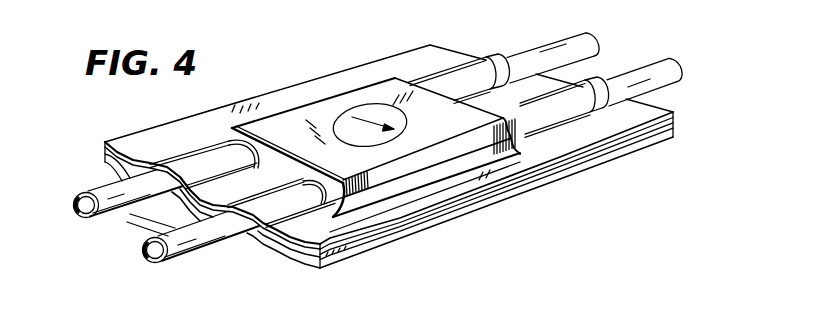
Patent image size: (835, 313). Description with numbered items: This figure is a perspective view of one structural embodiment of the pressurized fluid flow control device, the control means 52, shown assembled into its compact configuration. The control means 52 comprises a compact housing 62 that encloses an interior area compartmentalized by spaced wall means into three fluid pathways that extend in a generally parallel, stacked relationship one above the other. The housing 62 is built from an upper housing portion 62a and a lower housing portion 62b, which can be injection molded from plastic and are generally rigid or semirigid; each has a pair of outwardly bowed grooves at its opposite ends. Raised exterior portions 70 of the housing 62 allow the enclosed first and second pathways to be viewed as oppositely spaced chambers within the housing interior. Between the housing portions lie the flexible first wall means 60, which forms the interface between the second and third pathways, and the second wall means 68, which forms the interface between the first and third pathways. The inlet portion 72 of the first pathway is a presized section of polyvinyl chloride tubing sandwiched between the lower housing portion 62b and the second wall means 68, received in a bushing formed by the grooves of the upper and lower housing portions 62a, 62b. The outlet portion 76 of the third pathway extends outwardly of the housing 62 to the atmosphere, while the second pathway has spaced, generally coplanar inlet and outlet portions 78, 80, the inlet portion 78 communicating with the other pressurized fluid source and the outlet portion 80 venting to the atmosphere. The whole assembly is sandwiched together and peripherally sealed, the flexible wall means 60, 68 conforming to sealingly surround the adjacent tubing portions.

The control means 52 is at (441, 30).
The first wall means 60 is at (103, 148).
The housing 62 is at (392, 75).
The upper housing portion 62a is at (105, 141).
The lower housing portion 62b is at (104, 166).
The second wall means 68 is at (103, 157).
The raised exterior portions 70 is at (425, 133).
The inlet portion 72 is at (180, 243).
The outlet portion 76 is at (550, 47).
The inlet portion 78 is at (112, 198).
The outlet portion 80 is at (661, 80).